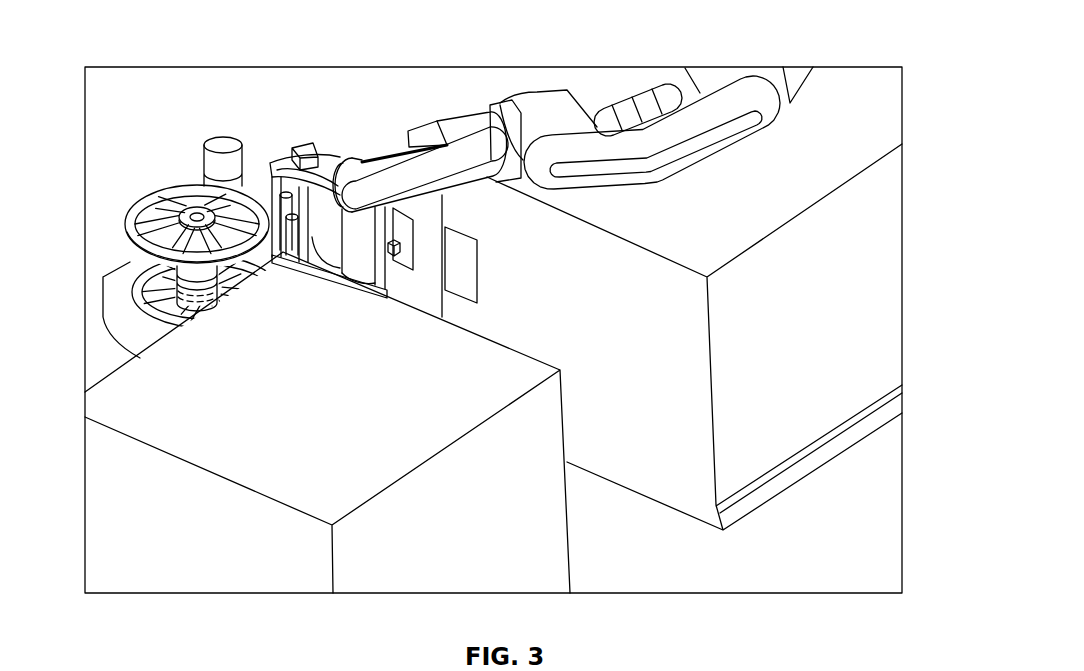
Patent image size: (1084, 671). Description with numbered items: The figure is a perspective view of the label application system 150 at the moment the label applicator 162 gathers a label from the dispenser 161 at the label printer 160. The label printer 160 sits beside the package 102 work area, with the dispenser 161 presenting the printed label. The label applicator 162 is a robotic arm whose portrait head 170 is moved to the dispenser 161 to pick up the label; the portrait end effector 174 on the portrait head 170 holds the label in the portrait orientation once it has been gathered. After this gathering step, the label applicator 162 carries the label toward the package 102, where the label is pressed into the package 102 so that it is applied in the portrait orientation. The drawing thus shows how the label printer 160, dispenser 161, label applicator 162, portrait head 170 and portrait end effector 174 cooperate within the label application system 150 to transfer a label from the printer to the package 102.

The package 102 is at (213, 573).
The label application system 150 is at (205, 118).
The label printer 160 is at (123, 276).
The dispenser 161 is at (330, 165).
The label applicator 162 is at (515, 131).
The portrait head 170 is at (391, 239).
The portrait end effector 174 is at (395, 250).